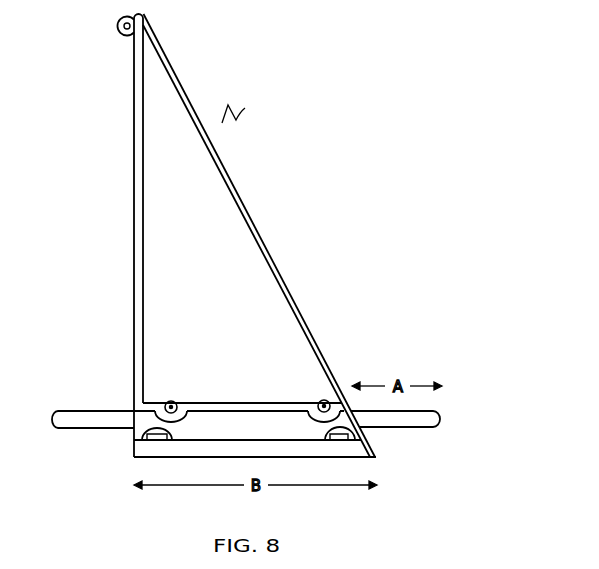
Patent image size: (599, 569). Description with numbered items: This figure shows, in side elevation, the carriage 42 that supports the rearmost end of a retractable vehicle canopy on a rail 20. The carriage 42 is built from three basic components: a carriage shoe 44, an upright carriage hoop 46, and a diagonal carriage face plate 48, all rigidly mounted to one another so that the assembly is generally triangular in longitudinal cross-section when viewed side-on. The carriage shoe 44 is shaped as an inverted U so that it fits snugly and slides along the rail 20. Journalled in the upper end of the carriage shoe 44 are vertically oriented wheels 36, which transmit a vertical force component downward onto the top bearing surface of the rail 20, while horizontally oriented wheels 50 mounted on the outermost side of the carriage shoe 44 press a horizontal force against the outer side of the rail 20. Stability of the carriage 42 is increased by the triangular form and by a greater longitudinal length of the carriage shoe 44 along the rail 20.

The rail 20 is at (413, 416).
The vertically oriented wheel 36 is at (176, 400).
The carriage 42 is at (247, 110).
The carriage shoe 44 is at (246, 432).
The carriage hoop 46 is at (140, 167).
The carriage face plate 48 is at (260, 230).
The horizontally oriented wheel 50 is at (148, 438).